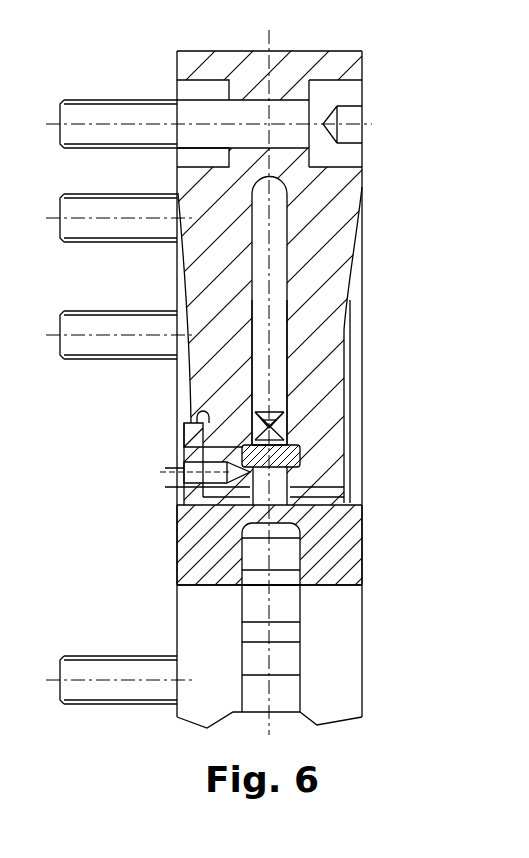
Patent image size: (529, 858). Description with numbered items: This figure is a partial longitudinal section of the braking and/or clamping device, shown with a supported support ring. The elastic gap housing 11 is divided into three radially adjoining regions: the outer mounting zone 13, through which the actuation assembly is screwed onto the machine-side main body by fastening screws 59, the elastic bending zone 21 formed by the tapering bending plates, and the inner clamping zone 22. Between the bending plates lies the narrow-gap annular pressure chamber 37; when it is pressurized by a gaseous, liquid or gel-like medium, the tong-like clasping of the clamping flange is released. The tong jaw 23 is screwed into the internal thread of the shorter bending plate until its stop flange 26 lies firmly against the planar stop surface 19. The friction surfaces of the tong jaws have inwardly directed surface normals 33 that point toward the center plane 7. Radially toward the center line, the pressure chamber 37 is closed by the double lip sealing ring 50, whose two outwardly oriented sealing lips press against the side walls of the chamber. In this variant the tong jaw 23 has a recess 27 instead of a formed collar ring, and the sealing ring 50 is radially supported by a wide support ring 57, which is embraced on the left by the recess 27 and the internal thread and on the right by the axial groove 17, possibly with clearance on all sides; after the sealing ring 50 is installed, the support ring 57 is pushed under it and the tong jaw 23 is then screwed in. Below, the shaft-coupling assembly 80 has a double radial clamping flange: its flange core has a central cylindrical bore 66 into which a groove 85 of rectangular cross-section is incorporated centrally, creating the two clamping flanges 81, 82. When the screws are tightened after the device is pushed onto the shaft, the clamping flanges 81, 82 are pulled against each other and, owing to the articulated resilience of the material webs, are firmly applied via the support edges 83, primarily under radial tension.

The center plane 7 is at (268, 252).
The gap housing 11 is at (195, 70).
The mounting zone 13 is at (176, 248).
The axial groove 17 is at (290, 440).
The stop surface 19 is at (278, 423).
The bending zone 21 is at (179, 375).
The clamping zone 22 is at (347, 477).
The tong jaw 23 is at (178, 495).
The stop flange 26 is at (193, 437).
The recess 27 is at (213, 468).
The surface normals 33 is at (355, 485).
The pressure chamber 37 is at (280, 308).
The sealing ring 50 is at (290, 410).
The support ring 57 is at (285, 455).
The fastening screws 59 is at (350, 96).
The central cylindrical bore 66 is at (332, 585).
The shaft-coupling assembly 80 is at (177, 565).
The clamping flange 81 is at (205, 543).
The clamping flange 82 is at (332, 560).
The support edges 83 is at (178, 585).
The groove 85 is at (300, 560).